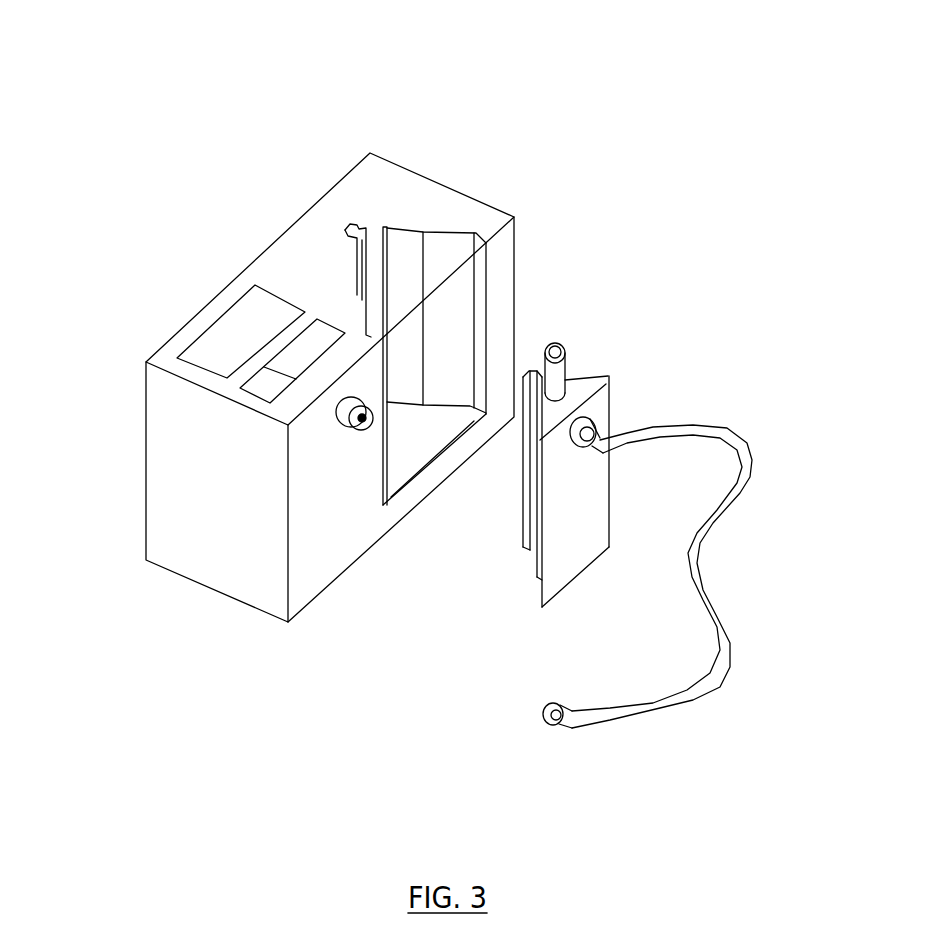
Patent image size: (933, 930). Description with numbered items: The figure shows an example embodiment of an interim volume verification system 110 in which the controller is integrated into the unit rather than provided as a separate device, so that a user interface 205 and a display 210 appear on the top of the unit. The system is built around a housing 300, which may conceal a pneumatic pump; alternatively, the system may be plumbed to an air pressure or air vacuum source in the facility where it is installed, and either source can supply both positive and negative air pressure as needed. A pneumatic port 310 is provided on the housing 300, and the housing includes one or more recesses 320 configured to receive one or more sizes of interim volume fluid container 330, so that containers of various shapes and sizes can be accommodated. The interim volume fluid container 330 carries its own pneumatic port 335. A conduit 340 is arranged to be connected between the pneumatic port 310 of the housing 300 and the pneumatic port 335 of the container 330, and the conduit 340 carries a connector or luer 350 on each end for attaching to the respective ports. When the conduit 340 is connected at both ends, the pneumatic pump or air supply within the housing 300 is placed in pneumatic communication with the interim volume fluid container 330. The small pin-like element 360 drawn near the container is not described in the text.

The interim volume verification system 110 is at (266, 136).
The user interface 205 is at (300, 348).
The display 210 is at (218, 330).
The housing 300 is at (220, 537).
The pneumatic port 310 is at (362, 421).
The recess 320 is at (395, 277).
The interim volume fluid container 330 is at (582, 380).
The pneumatic port 335 is at (584, 420).
The conduit 340 is at (740, 473).
The connector or luer 350 is at (550, 714).
The pin 360 is at (560, 350).